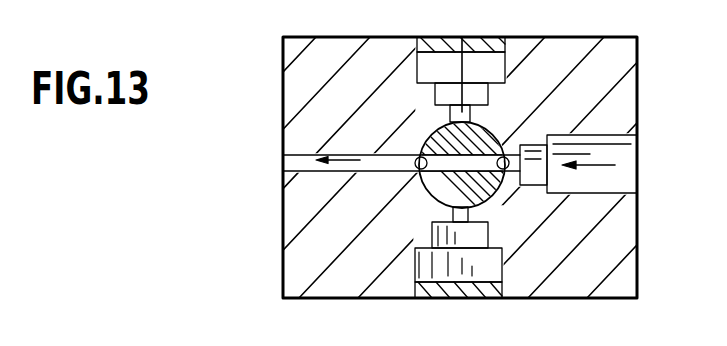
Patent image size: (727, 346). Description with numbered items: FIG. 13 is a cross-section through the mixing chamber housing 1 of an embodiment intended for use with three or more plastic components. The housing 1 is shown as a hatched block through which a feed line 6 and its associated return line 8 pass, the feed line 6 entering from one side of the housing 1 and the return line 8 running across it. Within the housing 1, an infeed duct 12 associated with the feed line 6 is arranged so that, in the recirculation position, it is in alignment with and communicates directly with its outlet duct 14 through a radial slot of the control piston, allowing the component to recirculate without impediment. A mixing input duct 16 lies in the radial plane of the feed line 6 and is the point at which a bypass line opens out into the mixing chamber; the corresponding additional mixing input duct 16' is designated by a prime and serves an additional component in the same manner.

The mixing chamber housing 1 is at (355, 281).
The feed line 6 is at (632, 150).
The return line 8 is at (283, 170).
The infeed duct 12 is at (499, 134).
The outlet duct 14 is at (421, 158).
The mixing input duct 16 is at (463, 62).
The additional mixing input duct 16' is at (479, 252).